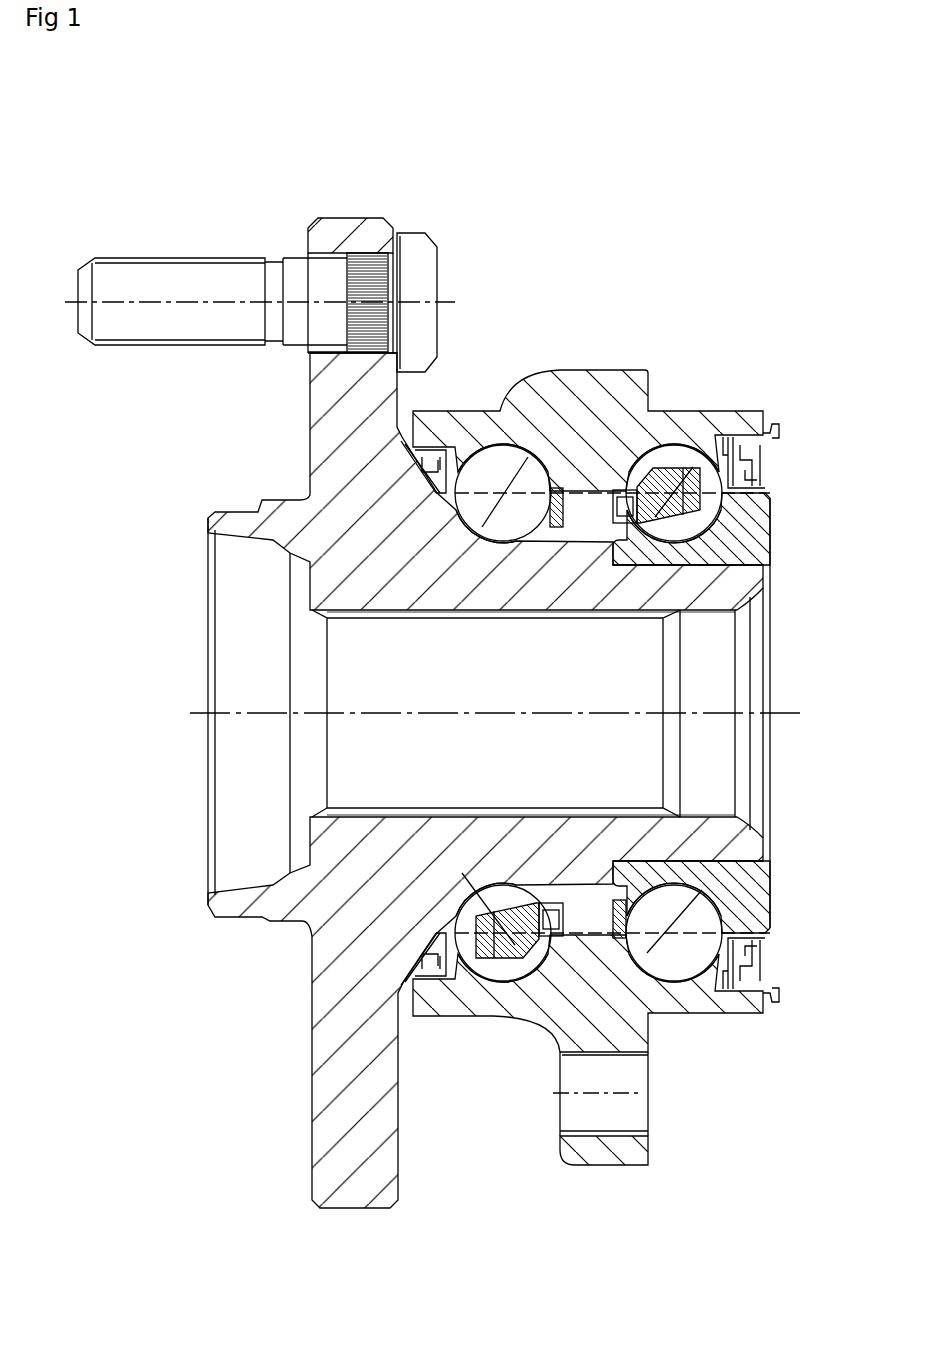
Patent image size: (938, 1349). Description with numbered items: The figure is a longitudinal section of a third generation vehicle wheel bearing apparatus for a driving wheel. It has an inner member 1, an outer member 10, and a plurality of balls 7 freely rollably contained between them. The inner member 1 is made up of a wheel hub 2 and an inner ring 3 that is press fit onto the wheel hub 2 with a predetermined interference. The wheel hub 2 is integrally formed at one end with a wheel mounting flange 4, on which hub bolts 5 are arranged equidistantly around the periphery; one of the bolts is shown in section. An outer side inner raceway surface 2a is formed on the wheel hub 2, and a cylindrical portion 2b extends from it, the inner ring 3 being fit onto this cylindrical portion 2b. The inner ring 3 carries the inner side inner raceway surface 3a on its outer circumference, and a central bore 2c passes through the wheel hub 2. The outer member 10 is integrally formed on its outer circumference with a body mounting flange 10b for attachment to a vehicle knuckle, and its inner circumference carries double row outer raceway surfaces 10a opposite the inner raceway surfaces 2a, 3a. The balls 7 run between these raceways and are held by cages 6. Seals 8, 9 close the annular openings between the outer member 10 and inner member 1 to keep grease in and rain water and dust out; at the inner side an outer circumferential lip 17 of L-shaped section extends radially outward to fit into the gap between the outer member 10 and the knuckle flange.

The inner member 1 is at (310, 593).
The wheel hub 2 is at (345, 497).
The inner raceway surface 2a is at (485, 542).
The cylindrical portion 2b is at (722, 575).
The bore of hub wheel 2c is at (370, 617).
The inner ring 3 is at (755, 525).
The inner raceway surface 3a is at (675, 512).
The wheel mounting flange 4 is at (358, 233).
The hub bolt 5 is at (176, 270).
The cage 6 is at (612, 880).
The ball 7 is at (647, 953).
The seal 8 is at (403, 467).
The seal 9 is at (770, 463).
The outer member 10 is at (601, 378).
The outer raceway surface 10a is at (497, 456).
The body mounting flange 10b is at (617, 1150).
The outer circumferential lip 17 is at (778, 428).